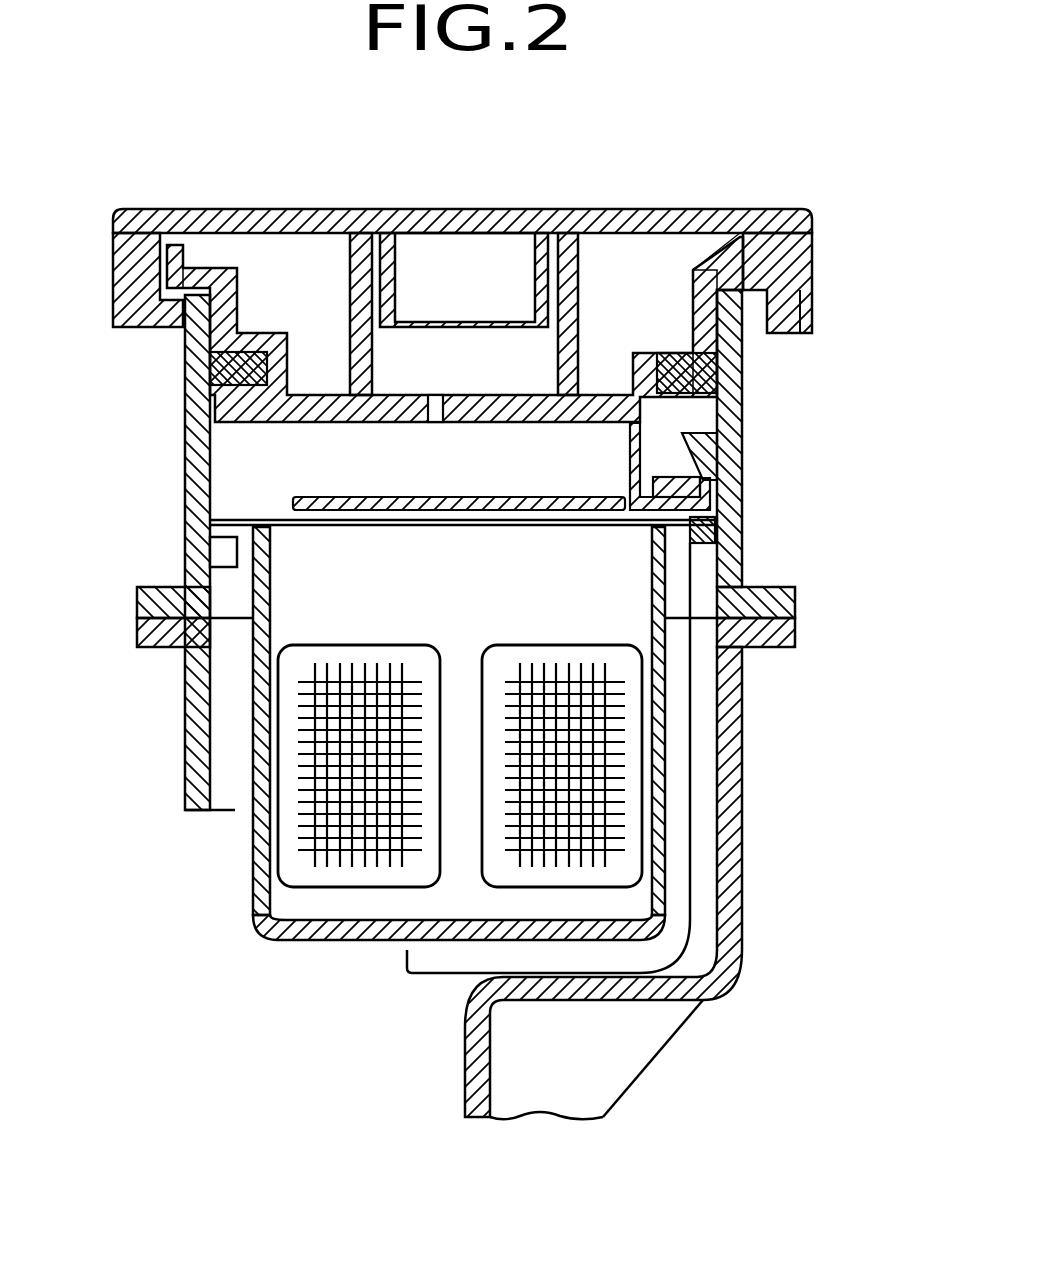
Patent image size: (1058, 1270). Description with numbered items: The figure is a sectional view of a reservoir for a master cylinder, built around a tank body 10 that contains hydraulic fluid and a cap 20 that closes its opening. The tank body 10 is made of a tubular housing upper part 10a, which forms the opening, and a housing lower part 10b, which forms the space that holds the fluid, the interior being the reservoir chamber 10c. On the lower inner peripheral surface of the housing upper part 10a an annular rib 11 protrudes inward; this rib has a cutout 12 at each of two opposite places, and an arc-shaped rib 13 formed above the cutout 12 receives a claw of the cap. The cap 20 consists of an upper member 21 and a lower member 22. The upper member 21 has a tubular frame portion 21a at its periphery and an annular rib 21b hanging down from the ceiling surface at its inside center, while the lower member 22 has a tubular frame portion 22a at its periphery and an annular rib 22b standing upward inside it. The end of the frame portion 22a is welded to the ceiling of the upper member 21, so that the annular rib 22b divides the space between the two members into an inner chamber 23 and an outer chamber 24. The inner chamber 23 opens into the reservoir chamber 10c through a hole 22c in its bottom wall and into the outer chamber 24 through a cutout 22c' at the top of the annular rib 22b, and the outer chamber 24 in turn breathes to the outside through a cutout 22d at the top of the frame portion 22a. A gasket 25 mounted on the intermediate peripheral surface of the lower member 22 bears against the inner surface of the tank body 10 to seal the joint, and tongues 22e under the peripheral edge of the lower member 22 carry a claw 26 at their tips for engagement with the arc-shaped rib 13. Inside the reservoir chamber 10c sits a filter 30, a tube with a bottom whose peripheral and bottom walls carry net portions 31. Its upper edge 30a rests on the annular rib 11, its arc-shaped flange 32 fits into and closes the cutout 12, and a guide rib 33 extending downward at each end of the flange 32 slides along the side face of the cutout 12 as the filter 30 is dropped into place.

The tank body 10 is at (183, 467).
The housing upper part 10a is at (183, 395).
The housing lower part 10b is at (183, 715).
The reservoir chamber 10c is at (700, 682).
The annular rib 11 is at (236, 553).
The cutout 12 is at (707, 533).
The arc-shaped rib 13 is at (707, 453).
The cap 20 is at (612, 202).
The upper member 21 is at (478, 214).
The tubular frame portion 21a is at (783, 277).
The annular rib 21b is at (400, 268).
The lower member 22 is at (318, 410).
The tubular frame portion 22a is at (695, 343).
The annular rib 22b is at (352, 300).
The hole 22c is at (399, 443).
The cutout 22c' is at (598, 248).
The cutout 22d is at (177, 244).
The tongue 22e is at (642, 462).
The inner chamber 23 is at (485, 378).
The outer chamber 24 is at (640, 328).
The gasket 25 is at (690, 378).
The claw 26 is at (680, 493).
The filter 30 is at (676, 845).
The upper edge 30a is at (265, 532).
The net portion 31 is at (350, 790).
The flange 32 is at (684, 527).
The guide rib 33 is at (697, 790).